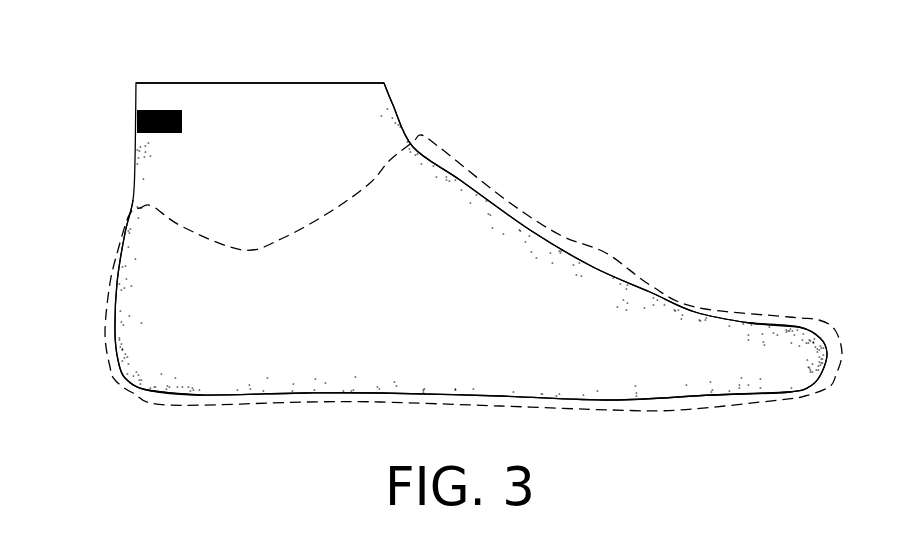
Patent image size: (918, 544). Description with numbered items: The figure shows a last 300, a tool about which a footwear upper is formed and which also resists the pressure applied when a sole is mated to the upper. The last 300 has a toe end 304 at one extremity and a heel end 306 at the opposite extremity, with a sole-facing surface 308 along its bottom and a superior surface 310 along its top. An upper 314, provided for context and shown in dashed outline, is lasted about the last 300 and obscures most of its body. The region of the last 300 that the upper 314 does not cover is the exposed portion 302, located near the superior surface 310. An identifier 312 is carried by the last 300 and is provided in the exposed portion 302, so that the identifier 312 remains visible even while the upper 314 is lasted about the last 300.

The last 300 is at (548, 307).
The exposed portion 302 is at (398, 115).
The toe end 304 is at (797, 318).
The heel end 306 is at (118, 372).
The sole-facing surface 308 is at (479, 399).
The superior surface 310 is at (251, 74).
The identifier 312 is at (134, 118).
The upper 314 is at (105, 286).